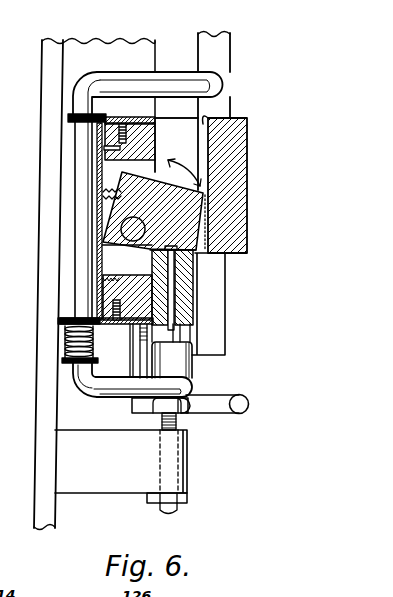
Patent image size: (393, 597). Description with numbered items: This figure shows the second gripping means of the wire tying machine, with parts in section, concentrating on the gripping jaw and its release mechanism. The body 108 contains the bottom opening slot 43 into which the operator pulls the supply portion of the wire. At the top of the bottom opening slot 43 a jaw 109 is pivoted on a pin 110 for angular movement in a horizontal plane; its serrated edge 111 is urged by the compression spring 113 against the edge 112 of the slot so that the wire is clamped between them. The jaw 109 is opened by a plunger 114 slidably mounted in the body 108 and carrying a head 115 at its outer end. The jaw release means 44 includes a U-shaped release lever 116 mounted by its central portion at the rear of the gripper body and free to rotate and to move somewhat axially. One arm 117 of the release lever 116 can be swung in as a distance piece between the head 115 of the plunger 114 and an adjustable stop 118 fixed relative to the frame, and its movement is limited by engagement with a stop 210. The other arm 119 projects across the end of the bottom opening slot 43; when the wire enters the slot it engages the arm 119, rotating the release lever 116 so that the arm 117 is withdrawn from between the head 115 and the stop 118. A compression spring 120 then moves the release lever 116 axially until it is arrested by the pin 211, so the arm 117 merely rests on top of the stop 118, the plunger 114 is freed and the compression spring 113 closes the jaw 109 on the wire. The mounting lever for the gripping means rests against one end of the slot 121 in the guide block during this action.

The bottom opening slot 43 is at (188, 108).
The jaw release means 44 is at (201, 363).
The body 108 is at (240, 157).
The jaw 109 is at (187, 222).
The pin 110 is at (127, 242).
The serrated edge 111 is at (208, 202).
The edge of the bottom opening slot 112 is at (207, 117).
The compression spring 113 is at (98, 192).
The plunger 114 is at (205, 286).
The head 115 is at (190, 346).
The U-shaped release lever 116 is at (75, 228).
The arm 117 is at (186, 386).
The adjustable stop 118 is at (186, 414).
The arm 119 is at (223, 82).
The compression spring 120 is at (65, 340).
The slot 121 is at (173, 62).
The stop 210 is at (117, 365).
The pin 211 is at (88, 96).